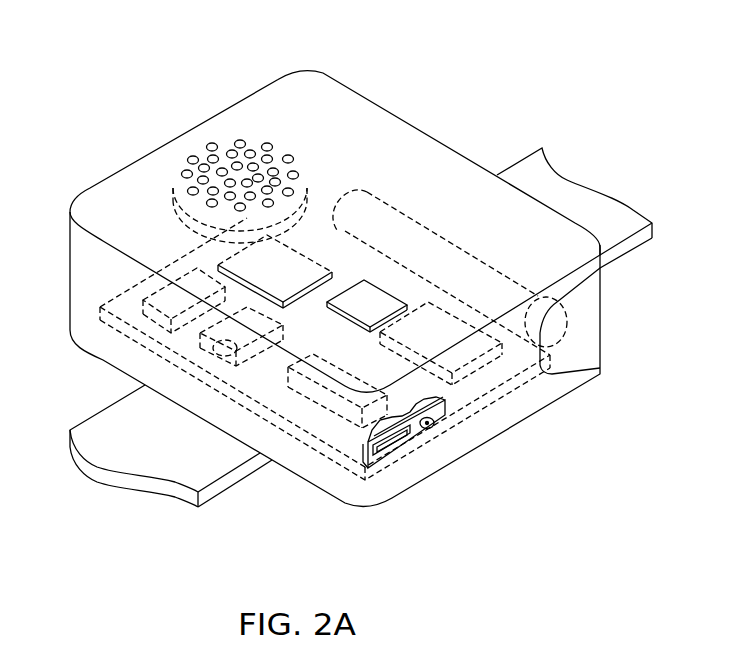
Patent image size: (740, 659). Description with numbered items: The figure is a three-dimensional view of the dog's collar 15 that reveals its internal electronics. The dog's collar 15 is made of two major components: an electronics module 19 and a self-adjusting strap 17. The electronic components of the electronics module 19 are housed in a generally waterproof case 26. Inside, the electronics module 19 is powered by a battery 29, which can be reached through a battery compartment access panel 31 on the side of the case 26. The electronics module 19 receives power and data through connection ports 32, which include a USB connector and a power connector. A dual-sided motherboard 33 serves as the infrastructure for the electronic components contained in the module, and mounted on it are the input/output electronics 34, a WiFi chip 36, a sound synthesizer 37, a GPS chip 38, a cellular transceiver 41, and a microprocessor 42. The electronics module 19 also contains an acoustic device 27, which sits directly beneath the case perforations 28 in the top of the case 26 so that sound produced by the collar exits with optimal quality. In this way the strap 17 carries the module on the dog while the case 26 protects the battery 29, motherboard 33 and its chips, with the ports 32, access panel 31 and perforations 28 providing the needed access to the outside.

The dog's collar 15 is at (545, 62).
The self-adjusting strap 17 is at (158, 443).
The electronics module 19 is at (357, 63).
The case 26 is at (297, 92).
The acoustic device 27 is at (173, 193).
The case perforations 28 is at (243, 122).
The battery 29 is at (423, 219).
The battery compartment access panel 31 is at (578, 348).
The connection ports 32 is at (375, 484).
The dual-sided motherboard 33 is at (421, 448).
The input/output electronics 34 is at (320, 404).
The WiFi chip 36 is at (478, 387).
The sound synthesizer 37 is at (160, 292).
The GPS chip 38 is at (243, 353).
The cellular transceiver 41 is at (357, 302).
The microprocessor 42 is at (303, 256).